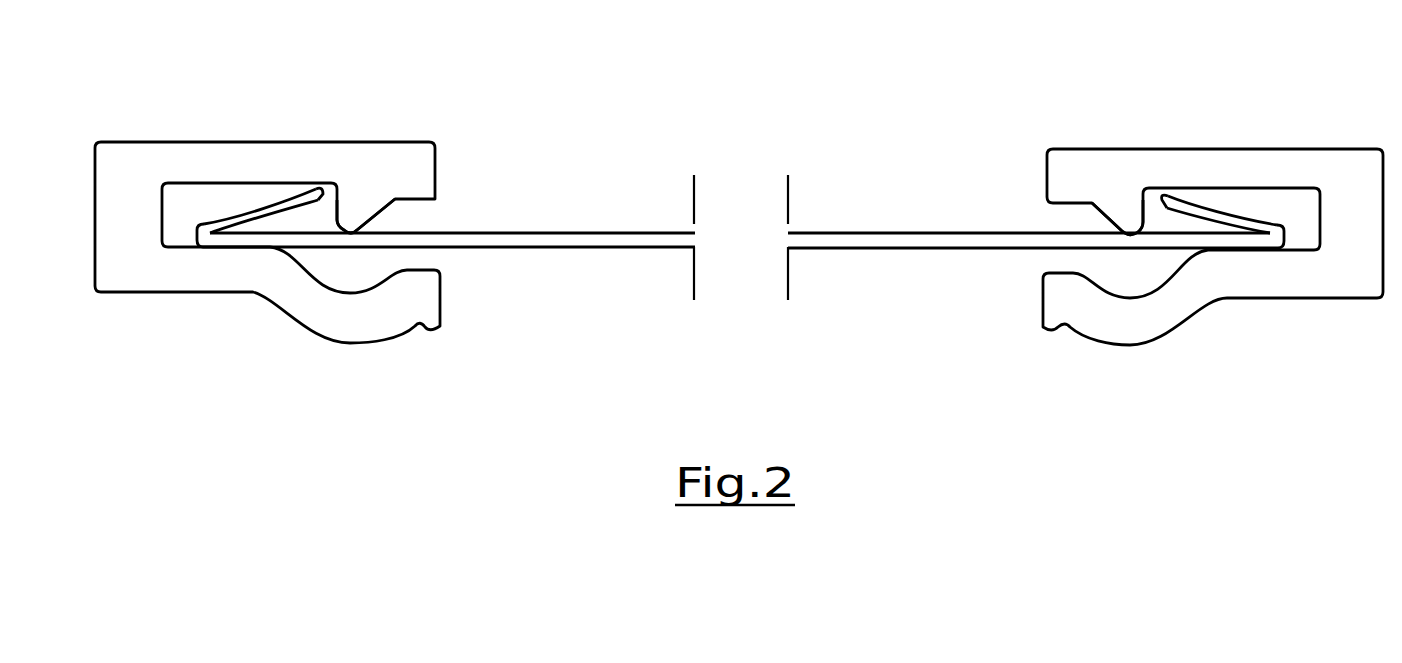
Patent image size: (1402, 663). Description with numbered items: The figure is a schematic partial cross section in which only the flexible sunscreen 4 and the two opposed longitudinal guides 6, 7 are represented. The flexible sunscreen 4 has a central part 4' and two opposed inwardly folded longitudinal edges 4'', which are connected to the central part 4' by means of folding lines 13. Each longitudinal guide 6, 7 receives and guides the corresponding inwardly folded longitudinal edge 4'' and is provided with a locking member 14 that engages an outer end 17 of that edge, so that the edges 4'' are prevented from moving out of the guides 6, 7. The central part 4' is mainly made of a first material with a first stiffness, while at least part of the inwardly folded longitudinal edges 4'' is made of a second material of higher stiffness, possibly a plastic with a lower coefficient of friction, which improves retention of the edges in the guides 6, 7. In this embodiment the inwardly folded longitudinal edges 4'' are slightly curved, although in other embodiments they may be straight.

The flexible sunscreen 4 is at (740, 150).
The central part 4' is at (740, 157).
The inwardly folded longitudinal edges 4'' is at (740, 150).
The longitudinal guide 6 is at (275, 157).
The longitudinal guide 7 is at (1188, 167).
The folding lines 13 is at (198, 223).
The locking members 14 is at (347, 218).
The outer end 17 is at (315, 191).